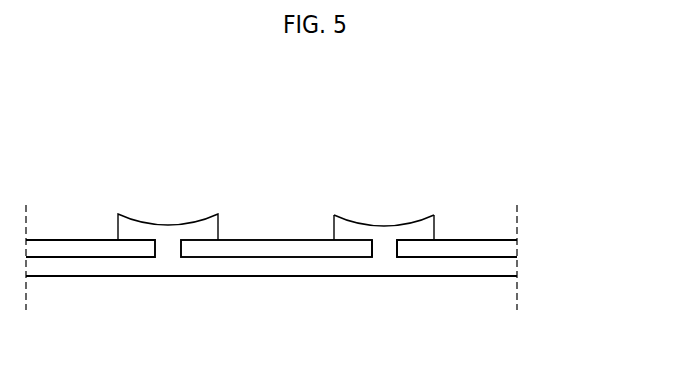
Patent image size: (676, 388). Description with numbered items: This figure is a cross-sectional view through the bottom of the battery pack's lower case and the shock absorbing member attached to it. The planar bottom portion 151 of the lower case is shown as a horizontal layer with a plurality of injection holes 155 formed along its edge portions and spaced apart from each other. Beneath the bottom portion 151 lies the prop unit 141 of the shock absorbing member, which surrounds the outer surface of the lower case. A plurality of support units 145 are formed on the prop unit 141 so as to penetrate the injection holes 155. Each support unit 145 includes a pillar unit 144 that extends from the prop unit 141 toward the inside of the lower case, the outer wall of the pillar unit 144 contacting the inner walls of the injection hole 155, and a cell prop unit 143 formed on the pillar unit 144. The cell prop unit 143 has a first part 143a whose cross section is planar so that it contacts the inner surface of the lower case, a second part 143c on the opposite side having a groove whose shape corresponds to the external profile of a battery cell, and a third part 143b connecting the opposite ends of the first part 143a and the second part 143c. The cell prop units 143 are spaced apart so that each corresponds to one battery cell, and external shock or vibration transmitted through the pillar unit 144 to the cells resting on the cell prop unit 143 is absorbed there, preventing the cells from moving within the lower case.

The prop unit 141 is at (512, 266).
The bottom portion 151 is at (512, 248).
The injection holes 155 is at (397, 250).
The support units 145 is at (384, 154).
The pillar unit 144 is at (382, 247).
The cell prop unit 143 is at (415, 167).
The first part 143a is at (420, 238).
The third part 143b is at (471, 188).
The second part 143c is at (358, 217).